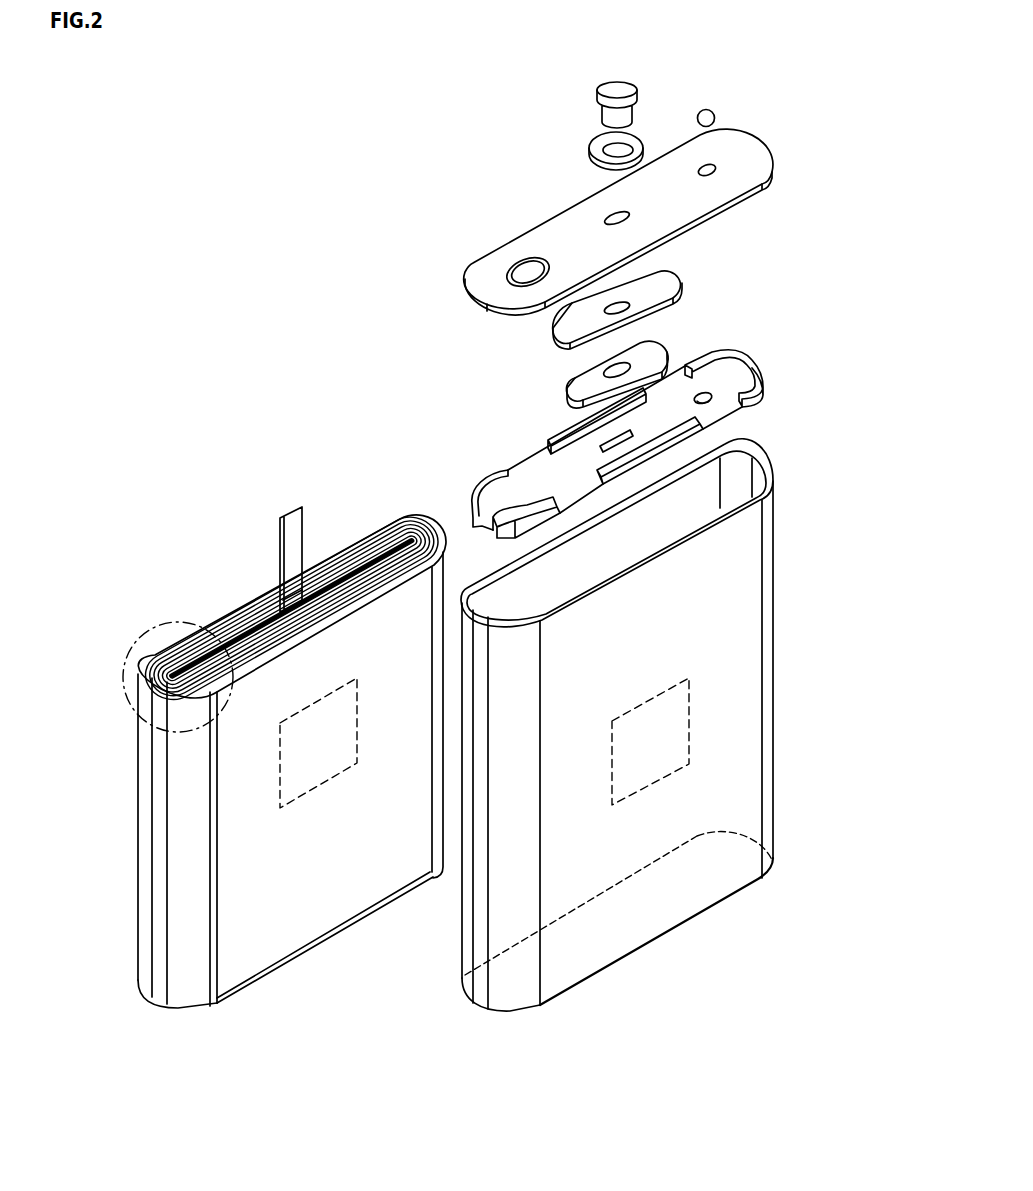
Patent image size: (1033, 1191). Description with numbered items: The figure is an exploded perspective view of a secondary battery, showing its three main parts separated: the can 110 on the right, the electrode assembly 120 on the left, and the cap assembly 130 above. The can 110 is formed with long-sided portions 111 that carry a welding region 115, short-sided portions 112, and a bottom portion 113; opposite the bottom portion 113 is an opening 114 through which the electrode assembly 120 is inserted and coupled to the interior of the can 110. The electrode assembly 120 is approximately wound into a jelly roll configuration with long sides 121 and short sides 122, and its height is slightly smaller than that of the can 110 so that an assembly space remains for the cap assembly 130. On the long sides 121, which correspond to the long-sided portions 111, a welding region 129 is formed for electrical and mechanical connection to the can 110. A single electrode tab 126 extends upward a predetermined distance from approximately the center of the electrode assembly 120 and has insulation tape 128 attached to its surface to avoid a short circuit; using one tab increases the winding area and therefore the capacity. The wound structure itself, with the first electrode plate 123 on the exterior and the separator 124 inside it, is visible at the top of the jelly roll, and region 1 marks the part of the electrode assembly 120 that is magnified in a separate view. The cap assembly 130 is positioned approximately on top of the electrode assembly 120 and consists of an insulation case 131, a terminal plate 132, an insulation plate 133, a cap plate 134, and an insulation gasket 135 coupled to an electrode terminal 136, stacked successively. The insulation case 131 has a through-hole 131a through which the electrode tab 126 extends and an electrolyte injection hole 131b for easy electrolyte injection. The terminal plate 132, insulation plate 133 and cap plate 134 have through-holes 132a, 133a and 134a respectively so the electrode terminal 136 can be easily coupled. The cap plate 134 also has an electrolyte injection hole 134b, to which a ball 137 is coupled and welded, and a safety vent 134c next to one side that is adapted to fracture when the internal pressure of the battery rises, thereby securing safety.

The region 1 is at (157, 625).
The can 110 is at (621, 723).
The long-sided portions 111 is at (700, 897).
The short-sided portions 112 is at (462, 987).
The bottom portion 113 is at (605, 951).
The opening 114 is at (733, 467).
The welding region 115 is at (656, 767).
The electrode assembly 120 is at (255, 734).
The long sides 121 is at (300, 880).
The short sides 122 is at (155, 860).
The first electrode plate 123 is at (245, 956).
The separator 124 is at (318, 942).
The electrode tab 126 is at (292, 508).
The insulation tape 128 is at (292, 597).
The welding region 129 is at (318, 770).
The cap assembly 130 is at (446, 102).
The insulation case 131 is at (638, 420).
The through-hole 131a is at (547, 444).
The electrolyte injection hole 131b is at (704, 392).
The terminal plate 132 is at (606, 368).
The through-hole 132a is at (574, 392).
The insulation plate 133 is at (608, 303).
The through-hole 133a is at (556, 334).
The cap plate 134 is at (642, 211).
The through-hole 134a is at (612, 217).
The electrolyte injection hole 134b is at (713, 172).
The safety vent 134c is at (528, 268).
The insulation gasket 135 is at (597, 140).
The electrode terminal 136 is at (606, 90).
The ball 137 is at (705, 109).